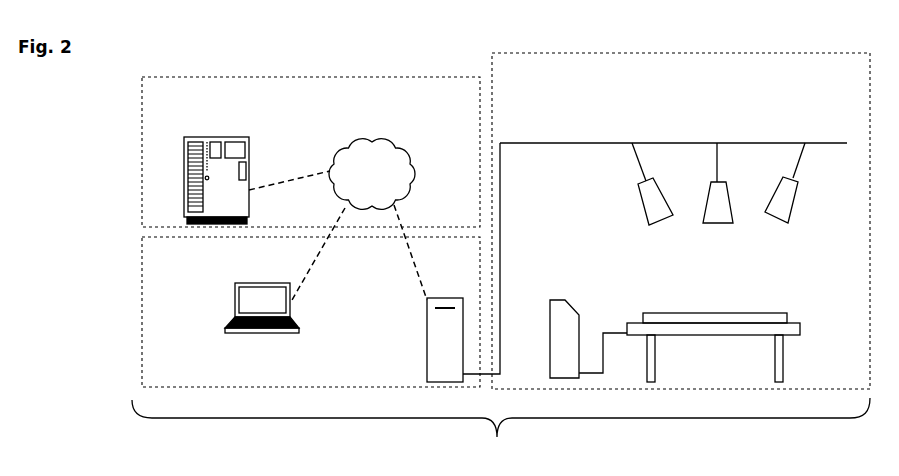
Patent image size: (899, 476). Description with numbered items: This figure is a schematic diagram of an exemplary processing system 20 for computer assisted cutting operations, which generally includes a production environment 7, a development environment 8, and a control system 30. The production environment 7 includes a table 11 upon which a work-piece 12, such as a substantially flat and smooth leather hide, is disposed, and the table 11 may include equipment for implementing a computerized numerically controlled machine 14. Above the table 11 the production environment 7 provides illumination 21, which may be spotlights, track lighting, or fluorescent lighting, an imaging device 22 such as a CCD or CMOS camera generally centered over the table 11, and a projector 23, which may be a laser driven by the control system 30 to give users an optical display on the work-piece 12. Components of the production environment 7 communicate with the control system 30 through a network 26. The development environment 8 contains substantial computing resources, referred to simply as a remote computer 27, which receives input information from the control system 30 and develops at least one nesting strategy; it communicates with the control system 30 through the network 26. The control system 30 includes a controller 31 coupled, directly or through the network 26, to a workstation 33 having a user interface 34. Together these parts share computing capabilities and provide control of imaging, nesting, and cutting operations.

The production environment 7 is at (681, 223).
The development environment 8 is at (311, 152).
The table 11 is at (630, 323).
The work-piece 12 is at (778, 313).
The computerized numerically controlled (CNC) machine 14 is at (563, 310).
The processing system 20 is at (501, 431).
The illumination 21 is at (637, 185).
The imaging device 22 is at (708, 183).
The projector 23 is at (782, 185).
The network 26 is at (570, 143).
The remote computer 27 is at (183, 203).
The control system 30 is at (311, 312).
The controller 31 is at (427, 367).
The workstation 33 is at (250, 323).
The user interface 34 is at (262, 300).